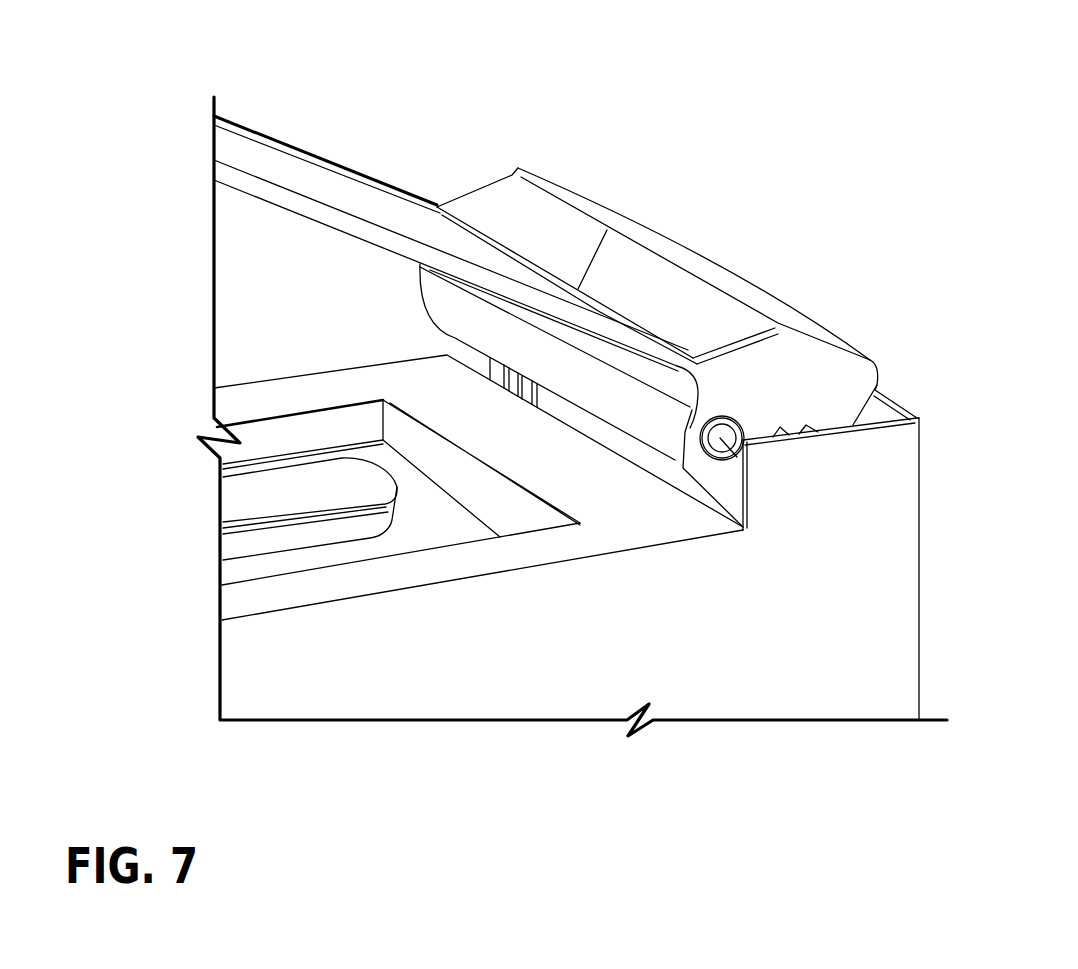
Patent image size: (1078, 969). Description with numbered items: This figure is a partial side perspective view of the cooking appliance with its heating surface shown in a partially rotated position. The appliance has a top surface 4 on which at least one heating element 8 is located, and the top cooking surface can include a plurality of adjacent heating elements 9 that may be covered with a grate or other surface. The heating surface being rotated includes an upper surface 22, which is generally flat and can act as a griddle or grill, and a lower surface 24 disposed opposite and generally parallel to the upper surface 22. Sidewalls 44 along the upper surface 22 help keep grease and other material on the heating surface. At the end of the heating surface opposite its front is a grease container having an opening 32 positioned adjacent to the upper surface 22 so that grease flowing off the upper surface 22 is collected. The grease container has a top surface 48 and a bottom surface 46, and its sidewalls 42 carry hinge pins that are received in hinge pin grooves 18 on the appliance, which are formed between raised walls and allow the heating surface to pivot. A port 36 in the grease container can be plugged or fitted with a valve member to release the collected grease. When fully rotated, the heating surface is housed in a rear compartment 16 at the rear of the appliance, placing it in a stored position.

The top surface 4 is at (657, 517).
The heating element 8 is at (330, 490).
The heating elements 9 is at (427, 520).
The rear compartment 16 is at (875, 410).
The hinge pin grooves 18 is at (803, 435).
The upper surface 22 is at (337, 197).
The lower surface 24 is at (300, 213).
The opening 32 is at (655, 287).
The port 36 is at (727, 442).
The sidewalls 42 is at (805, 378).
The sidewalls 44 is at (272, 140).
The bottom surface 46 is at (583, 410).
The top surface 48 is at (767, 300).